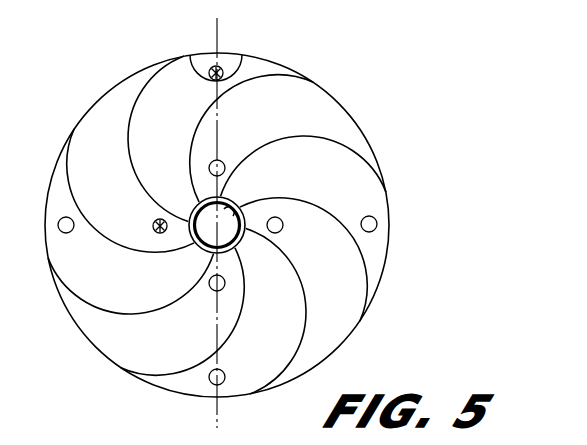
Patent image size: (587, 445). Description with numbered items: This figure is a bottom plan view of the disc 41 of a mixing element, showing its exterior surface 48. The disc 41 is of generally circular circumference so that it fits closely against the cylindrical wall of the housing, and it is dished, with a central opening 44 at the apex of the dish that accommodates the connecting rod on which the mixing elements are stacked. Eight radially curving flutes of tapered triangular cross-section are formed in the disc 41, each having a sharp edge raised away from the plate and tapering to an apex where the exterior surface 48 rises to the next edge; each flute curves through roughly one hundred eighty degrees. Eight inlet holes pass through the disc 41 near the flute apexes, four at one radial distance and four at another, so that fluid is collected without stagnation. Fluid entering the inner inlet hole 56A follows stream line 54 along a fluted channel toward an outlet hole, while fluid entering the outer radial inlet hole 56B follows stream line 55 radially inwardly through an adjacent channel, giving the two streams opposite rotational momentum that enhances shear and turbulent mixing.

The disc 41 is at (363, 131).
The central opening 44 is at (232, 212).
The exterior surface 48 is at (292, 110).
The flow stream line 54 is at (162, 218).
The flow stream line 55 is at (191, 55).
The inlet hole 56A is at (152, 227).
The inlet hole 56B is at (242, 55).